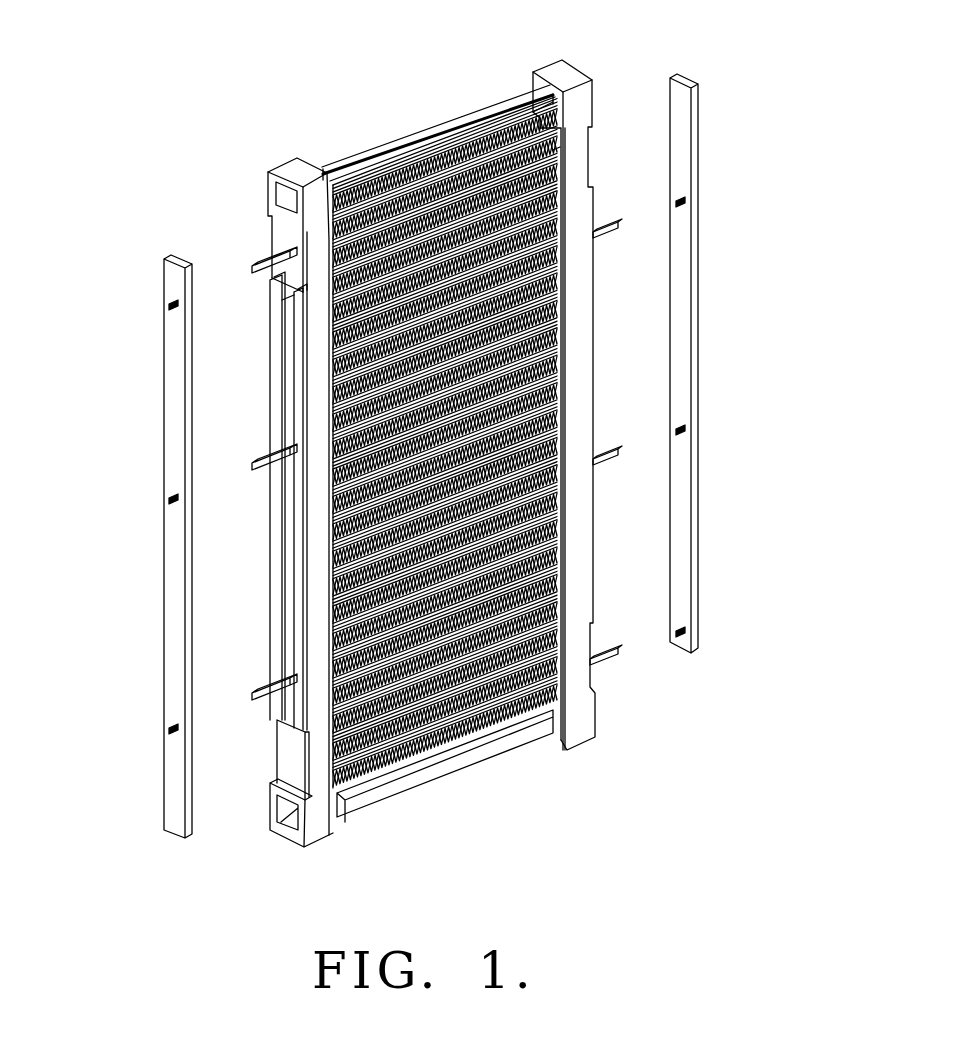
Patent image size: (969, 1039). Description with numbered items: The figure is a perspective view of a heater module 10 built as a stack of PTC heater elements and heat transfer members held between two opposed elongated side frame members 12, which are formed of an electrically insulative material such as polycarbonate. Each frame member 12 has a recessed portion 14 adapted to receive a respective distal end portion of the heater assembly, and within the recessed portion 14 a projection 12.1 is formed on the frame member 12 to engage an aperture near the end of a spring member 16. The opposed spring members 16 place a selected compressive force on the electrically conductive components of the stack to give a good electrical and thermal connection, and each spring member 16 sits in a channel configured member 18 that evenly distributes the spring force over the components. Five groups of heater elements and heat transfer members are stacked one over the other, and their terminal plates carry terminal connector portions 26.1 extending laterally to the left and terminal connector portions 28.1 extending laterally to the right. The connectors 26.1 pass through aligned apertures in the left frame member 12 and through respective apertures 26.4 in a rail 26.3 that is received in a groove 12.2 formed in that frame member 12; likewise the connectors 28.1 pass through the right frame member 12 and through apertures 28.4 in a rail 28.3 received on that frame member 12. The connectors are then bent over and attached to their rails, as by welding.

The module 10 is at (624, 60).
The side frame member 12 is at (586, 322).
The projection 12.1 is at (548, 96).
The groove 12.2 is at (292, 303).
The recessed portion 14 is at (553, 157).
The spring member 16 is at (446, 133).
The channel configured member 18 is at (372, 154).
The terminal connector portion 26.1 is at (270, 258).
The rail 26.3 is at (190, 586).
The aperture 26.4 is at (172, 304).
The terminal connector portion 28.1 is at (607, 223).
The rail 28.3 is at (694, 524).
The aperture 28.4 is at (684, 200).